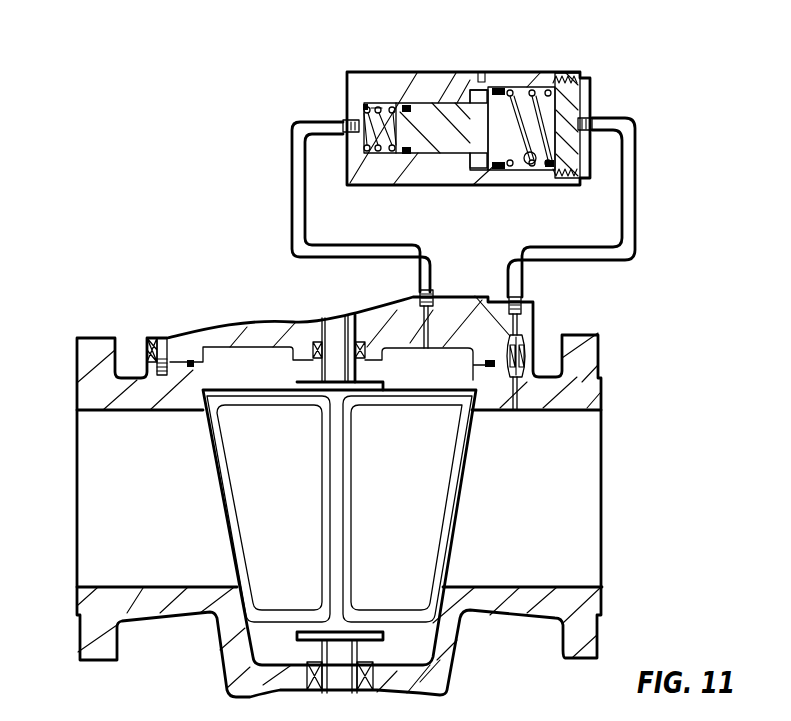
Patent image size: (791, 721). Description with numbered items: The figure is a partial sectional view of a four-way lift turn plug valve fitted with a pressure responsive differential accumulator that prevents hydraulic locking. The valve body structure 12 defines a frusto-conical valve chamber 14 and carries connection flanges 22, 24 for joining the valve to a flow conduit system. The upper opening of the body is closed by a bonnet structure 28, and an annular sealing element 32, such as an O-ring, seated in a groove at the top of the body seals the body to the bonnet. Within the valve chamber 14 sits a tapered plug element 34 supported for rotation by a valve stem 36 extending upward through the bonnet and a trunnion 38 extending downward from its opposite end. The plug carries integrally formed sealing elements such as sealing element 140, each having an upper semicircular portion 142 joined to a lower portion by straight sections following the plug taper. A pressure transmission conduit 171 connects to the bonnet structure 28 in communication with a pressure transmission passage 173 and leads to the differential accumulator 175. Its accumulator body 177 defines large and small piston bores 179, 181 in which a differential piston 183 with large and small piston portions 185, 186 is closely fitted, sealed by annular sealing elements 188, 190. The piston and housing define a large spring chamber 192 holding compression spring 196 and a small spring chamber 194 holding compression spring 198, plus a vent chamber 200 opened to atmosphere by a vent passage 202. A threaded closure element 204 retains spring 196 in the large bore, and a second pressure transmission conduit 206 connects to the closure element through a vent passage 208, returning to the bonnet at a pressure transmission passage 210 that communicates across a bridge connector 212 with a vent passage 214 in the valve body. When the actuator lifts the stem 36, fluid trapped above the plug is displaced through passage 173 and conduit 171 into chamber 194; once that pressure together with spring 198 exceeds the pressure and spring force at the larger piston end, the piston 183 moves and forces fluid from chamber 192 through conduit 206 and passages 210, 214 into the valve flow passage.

The valve body structure 12 is at (440, 657).
The valve chamber 14 is at (277, 650).
The connection flange 22 is at (97, 343).
The connection flange 24 is at (595, 333).
The bonnet structure 28 is at (254, 337).
The annular sealing element 32 is at (192, 360).
The plug element 34 is at (320, 432).
The valve stem 36 is at (335, 333).
The trunnion 38 is at (337, 675).
The sealing element 140 is at (400, 398).
The upper semicircular portion 142 is at (268, 402).
The pressure transmission conduit 171 is at (293, 227).
The pressure transmission passage 173 is at (433, 292).
The differential accumulator 175 is at (366, 63).
The accumulator body 177 is at (395, 80).
The large piston bore 179 is at (528, 168).
The small piston bore 181 is at (437, 168).
The differential piston 183 is at (500, 136).
The large piston portion 185 is at (510, 90).
The small piston portion 186 is at (400, 175).
The annular sealing element 188 is at (499, 90).
The annular sealing element 190 is at (404, 100).
The large spring chamber 192 is at (548, 117).
The small spring chamber 194 is at (362, 104).
The compression spring 196 is at (572, 180).
The compression spring 198 is at (345, 118).
The vent chamber 200 is at (479, 173).
The vent passage 202 is at (458, 72).
The closure element 204 is at (593, 116).
The second pressure transmission conduit 206 is at (633, 228).
The vent passage 208 is at (578, 113).
The pressure transmission passage 210 is at (524, 312).
The bridge connector 212 is at (527, 347).
The vent passage 214 is at (523, 398).